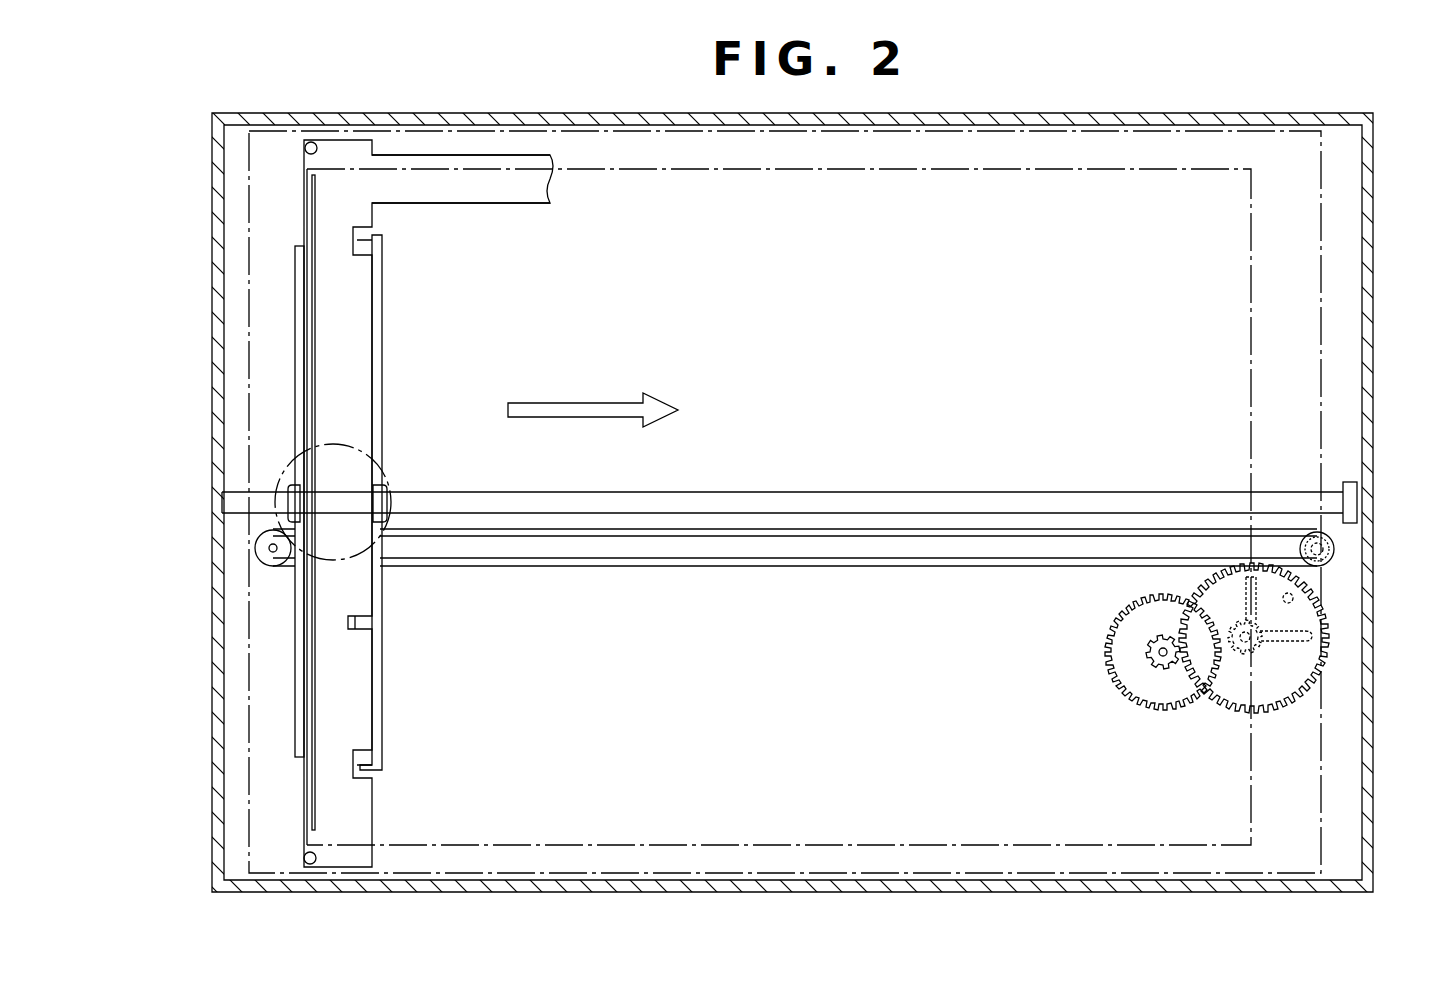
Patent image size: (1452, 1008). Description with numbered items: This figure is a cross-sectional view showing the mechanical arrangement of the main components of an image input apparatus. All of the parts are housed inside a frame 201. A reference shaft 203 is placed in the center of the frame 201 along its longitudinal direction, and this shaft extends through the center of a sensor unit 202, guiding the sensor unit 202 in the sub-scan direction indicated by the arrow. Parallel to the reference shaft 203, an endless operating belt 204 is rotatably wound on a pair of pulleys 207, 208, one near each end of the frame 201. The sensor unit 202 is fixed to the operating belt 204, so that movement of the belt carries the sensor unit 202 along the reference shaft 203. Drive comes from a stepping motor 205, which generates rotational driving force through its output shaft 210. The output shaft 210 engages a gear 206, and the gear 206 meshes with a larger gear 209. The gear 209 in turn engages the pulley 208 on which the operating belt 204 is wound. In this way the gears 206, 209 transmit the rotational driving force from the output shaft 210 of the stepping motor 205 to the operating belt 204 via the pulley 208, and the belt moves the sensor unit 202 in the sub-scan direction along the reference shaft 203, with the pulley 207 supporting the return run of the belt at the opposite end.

The frame 201 is at (1373, 207).
The sensor unit 202 is at (372, 317).
The reference shaft 203 is at (850, 492).
The operating belt 204 is at (850, 567).
The stepping motor 205 is at (1160, 713).
The gear 206 is at (1318, 653).
The pulley 207 is at (263, 563).
The pulley 208 is at (1335, 548).
The gear 209 is at (1335, 603).
The output shaft 210 is at (1150, 650).